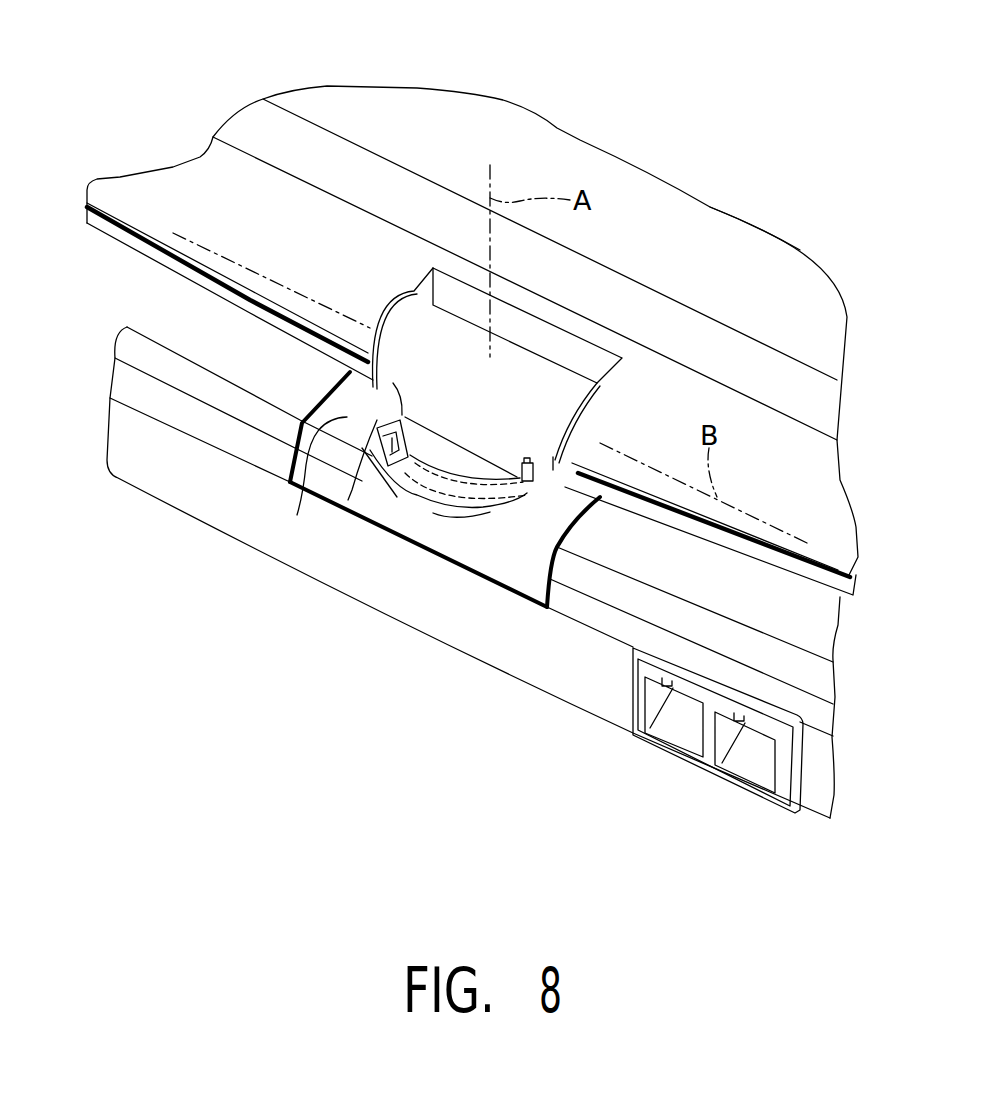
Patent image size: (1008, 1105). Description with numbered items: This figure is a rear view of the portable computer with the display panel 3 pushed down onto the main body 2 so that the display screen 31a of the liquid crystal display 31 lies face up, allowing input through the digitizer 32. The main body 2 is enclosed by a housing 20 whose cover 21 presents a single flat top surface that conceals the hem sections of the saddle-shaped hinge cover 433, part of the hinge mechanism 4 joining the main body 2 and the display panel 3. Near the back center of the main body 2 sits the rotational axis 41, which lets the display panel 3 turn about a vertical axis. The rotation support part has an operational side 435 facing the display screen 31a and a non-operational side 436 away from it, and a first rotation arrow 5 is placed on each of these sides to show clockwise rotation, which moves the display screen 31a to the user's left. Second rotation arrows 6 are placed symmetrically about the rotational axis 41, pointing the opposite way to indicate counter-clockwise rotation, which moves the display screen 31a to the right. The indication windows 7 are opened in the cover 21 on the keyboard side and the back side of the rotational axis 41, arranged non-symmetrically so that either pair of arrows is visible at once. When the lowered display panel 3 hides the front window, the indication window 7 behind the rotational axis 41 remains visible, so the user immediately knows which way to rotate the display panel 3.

The main body 2 is at (108, 450).
The display panel 3 is at (173, 170).
The hinge mechanism 4 is at (565, 321).
The first rotation arrows 5 is at (420, 510).
The second rotation arrows 6 is at (357, 505).
The indication window 7 is at (402, 414).
The housing 20 is at (840, 627).
The cover 21 is at (297, 515).
The liquid crystal display 31 is at (421, 121).
The display screen 31a is at (705, 213).
The digitizer 32 is at (336, 108).
The rotational axis 41 is at (552, 497).
The hinge cover 433 is at (417, 310).
The operational side 435 is at (405, 379).
The non-operational side 436 is at (552, 387).